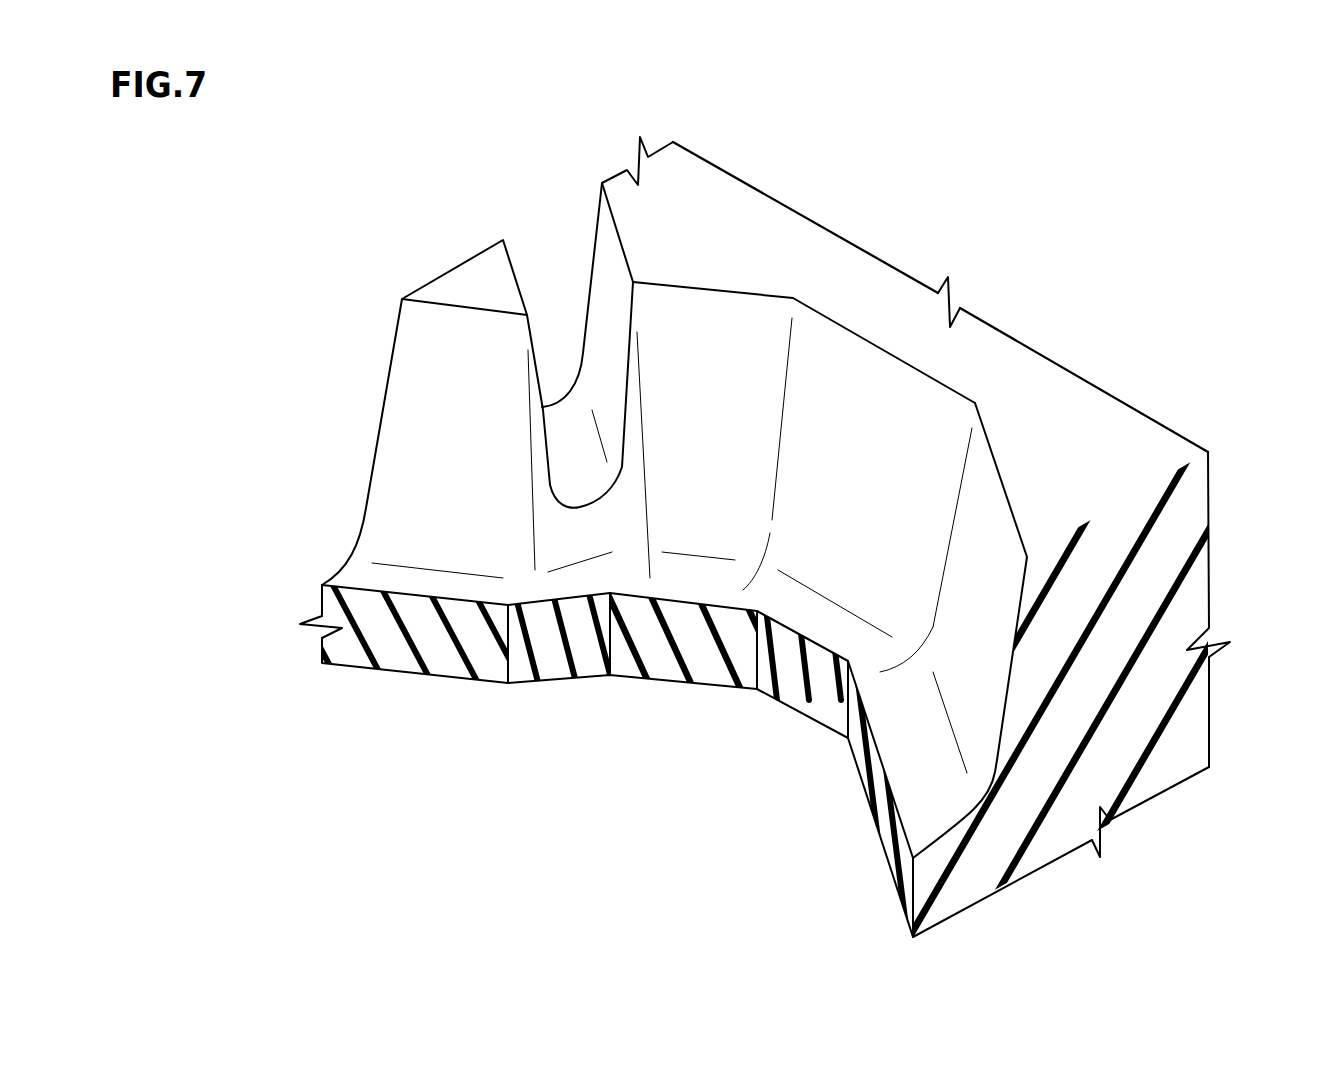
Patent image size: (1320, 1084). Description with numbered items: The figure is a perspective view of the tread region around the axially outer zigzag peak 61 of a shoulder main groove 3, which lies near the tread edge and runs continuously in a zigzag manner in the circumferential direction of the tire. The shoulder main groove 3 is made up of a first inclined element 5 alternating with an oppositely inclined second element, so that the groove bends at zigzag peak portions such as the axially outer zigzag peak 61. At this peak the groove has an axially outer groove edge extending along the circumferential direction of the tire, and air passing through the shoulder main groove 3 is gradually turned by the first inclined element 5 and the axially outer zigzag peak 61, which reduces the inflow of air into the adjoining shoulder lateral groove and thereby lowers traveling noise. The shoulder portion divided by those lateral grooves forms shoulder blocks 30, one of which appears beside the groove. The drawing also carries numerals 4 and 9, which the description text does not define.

The shoulder main groove 3 is at (963, 643).
The groove side wall 4 is at (742, 342).
The first inclined element 5 is at (977, 553).
The sipe 9 is at (552, 272).
The shoulder block 30 is at (847, 283).
The axially outer zigzag peak 61 is at (845, 393).